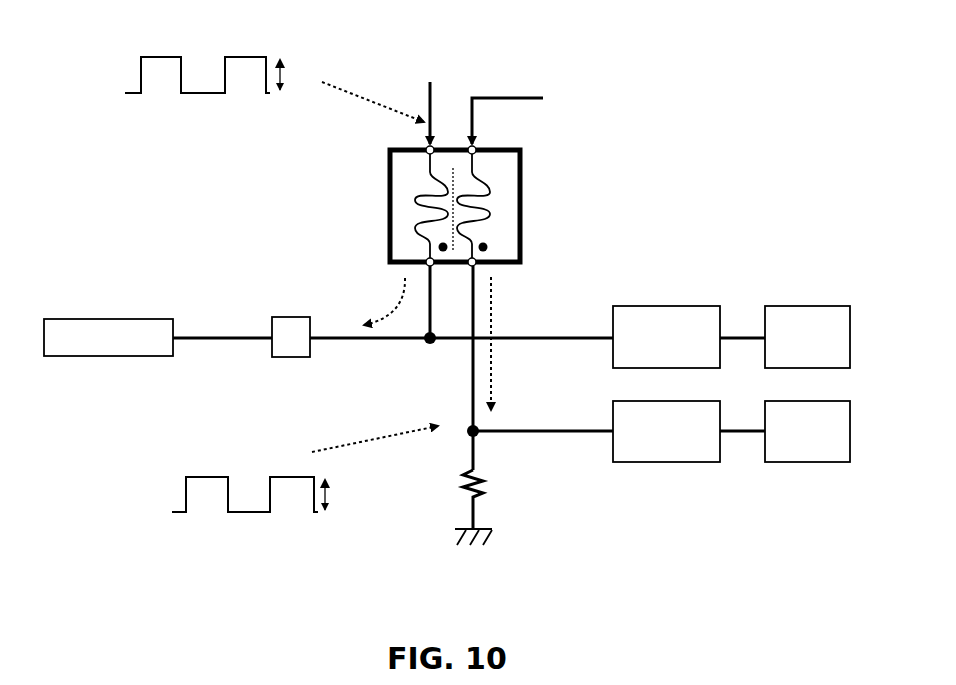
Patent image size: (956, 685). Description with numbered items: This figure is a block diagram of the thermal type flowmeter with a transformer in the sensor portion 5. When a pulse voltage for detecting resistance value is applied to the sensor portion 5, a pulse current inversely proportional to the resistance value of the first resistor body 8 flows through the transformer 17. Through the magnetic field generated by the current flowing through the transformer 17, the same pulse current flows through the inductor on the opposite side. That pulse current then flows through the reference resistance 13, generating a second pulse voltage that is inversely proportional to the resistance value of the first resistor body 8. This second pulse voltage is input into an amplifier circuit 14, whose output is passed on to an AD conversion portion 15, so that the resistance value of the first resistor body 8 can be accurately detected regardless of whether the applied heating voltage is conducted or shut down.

The sensor portion 5 is at (787, 116).
The first resistor body 8 is at (112, 317).
The reference resistance 13 is at (495, 482).
The amplifier circuit 14 is at (683, 305).
The AD conversion portion 15 is at (826, 305).
The transformer 17 is at (523, 208).